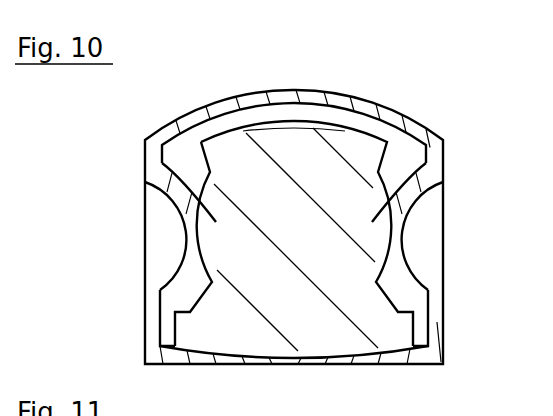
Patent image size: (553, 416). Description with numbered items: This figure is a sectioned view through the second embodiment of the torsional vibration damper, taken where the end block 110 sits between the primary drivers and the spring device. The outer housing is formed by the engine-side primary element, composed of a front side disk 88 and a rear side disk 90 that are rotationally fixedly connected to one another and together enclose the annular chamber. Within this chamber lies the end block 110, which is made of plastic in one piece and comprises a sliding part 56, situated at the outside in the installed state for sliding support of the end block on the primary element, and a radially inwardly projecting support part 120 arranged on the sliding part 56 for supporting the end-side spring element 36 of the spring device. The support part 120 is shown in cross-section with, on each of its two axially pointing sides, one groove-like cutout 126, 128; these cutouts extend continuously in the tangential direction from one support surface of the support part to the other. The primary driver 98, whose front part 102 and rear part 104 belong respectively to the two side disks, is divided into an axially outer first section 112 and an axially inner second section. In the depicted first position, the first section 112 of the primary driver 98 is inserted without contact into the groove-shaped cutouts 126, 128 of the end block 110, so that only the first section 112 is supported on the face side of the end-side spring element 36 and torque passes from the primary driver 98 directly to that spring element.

The end-side spring element 36 is at (300, 125).
The sliding part 56 is at (394, 330).
The front side disk 88 is at (436, 318).
The rear side disk 90 is at (150, 315).
The primary driver 98 is at (292, 236).
The front part 102 is at (418, 232).
The rear part 104 is at (168, 234).
The end block 110 is at (196, 137).
The first section 112 is at (198, 221).
The support part 120 is at (258, 178).
The cutout 126 is at (212, 235).
The cutout 128 is at (376, 240).